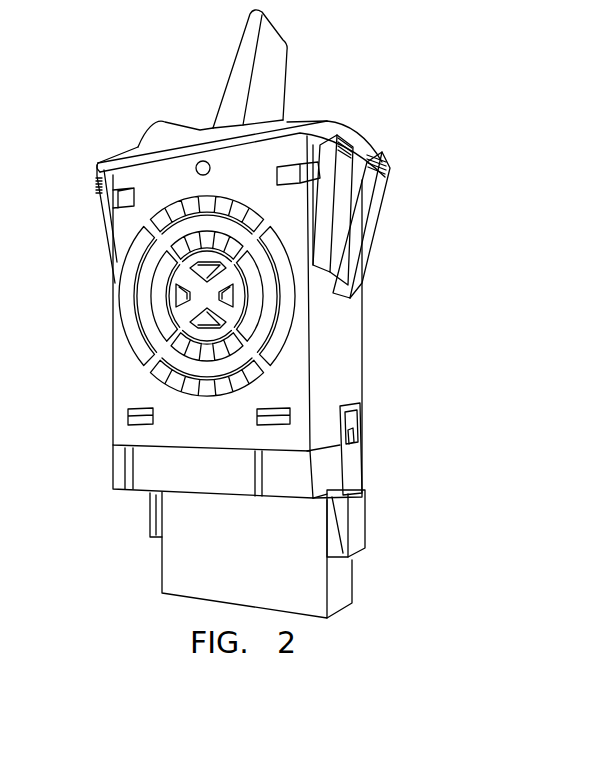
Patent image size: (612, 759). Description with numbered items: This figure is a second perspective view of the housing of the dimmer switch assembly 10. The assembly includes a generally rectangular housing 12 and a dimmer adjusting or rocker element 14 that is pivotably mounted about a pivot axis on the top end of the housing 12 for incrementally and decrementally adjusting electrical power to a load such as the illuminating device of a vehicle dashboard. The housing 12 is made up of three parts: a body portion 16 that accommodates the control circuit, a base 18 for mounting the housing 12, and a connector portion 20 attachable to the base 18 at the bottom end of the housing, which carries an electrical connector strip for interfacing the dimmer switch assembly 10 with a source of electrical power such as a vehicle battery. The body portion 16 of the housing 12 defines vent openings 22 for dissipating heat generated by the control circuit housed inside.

The dimmer switch assembly 10 is at (423, 165).
The housing 12 is at (422, 327).
The rocker element 14 is at (270, 80).
The body portion 16 is at (340, 370).
The base 18 is at (330, 478).
The connector portion 20 is at (190, 572).
The vent openings 22 is at (187, 296).